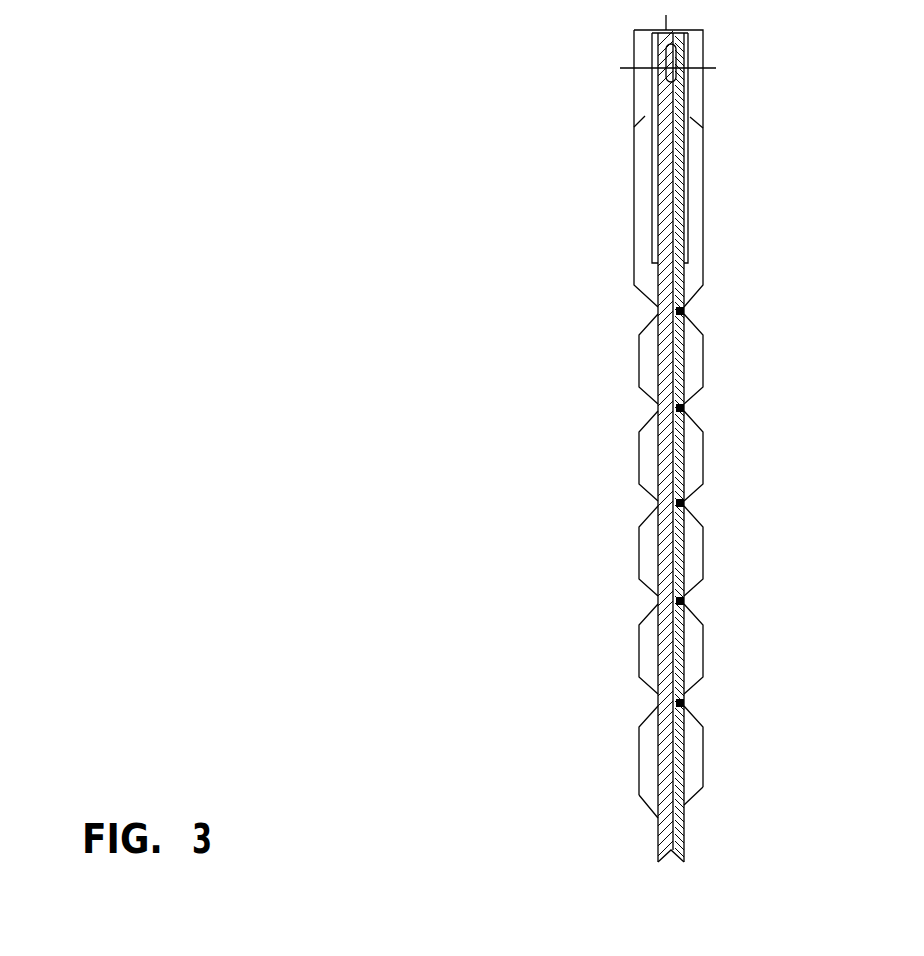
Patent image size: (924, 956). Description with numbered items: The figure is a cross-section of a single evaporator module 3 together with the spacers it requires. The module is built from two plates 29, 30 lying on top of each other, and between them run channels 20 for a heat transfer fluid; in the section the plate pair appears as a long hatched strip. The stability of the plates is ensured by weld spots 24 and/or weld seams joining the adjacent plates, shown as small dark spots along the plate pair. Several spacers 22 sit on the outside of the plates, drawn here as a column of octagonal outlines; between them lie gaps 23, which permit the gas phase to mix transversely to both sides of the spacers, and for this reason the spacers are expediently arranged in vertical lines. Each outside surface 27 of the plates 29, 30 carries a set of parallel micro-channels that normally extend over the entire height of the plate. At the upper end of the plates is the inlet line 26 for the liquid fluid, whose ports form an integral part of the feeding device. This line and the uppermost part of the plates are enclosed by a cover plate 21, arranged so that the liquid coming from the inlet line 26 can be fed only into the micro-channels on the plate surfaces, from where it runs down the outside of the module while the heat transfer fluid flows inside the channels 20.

The device 3 is at (690, 438).
The channels 20 is at (672, 532).
The cover plate 21 is at (680, 215).
The spacers 22 is at (697, 452).
The gaps 23 is at (647, 705).
The weld spots 24 is at (676, 600).
The inlet line 26 is at (678, 70).
The outside surface 27 is at (660, 312).
The plate 29 is at (677, 802).
The plate 30 is at (661, 820).